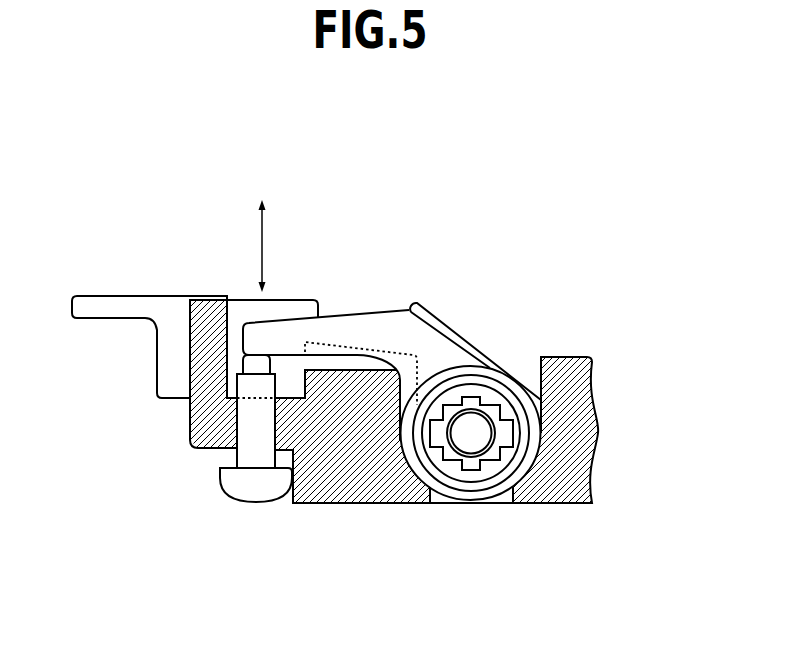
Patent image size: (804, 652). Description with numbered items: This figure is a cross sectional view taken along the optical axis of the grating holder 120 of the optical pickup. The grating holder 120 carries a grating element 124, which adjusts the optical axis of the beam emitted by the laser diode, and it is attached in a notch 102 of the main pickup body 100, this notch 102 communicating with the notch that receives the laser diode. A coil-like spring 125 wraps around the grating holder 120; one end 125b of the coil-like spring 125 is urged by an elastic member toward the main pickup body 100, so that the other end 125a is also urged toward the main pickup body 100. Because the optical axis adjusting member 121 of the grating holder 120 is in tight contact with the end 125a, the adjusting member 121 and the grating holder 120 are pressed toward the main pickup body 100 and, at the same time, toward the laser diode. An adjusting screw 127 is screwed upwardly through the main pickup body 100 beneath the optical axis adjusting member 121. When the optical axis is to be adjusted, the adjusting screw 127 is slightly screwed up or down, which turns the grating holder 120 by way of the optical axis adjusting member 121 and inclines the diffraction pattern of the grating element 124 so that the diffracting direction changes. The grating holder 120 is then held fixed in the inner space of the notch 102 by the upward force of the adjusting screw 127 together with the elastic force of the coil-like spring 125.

The main pickup body 100 is at (152, 268).
The notch 102 is at (546, 378).
The grating holder 120 is at (520, 453).
The optical axis adjusting member 121 is at (365, 328).
The grating element 124 is at (475, 467).
The coil-like spring 125 is at (530, 407).
The end of coil-like spring 125a is at (430, 311).
The end of coil-like spring 125b is at (338, 342).
The adjusting screw 127 is at (245, 485).